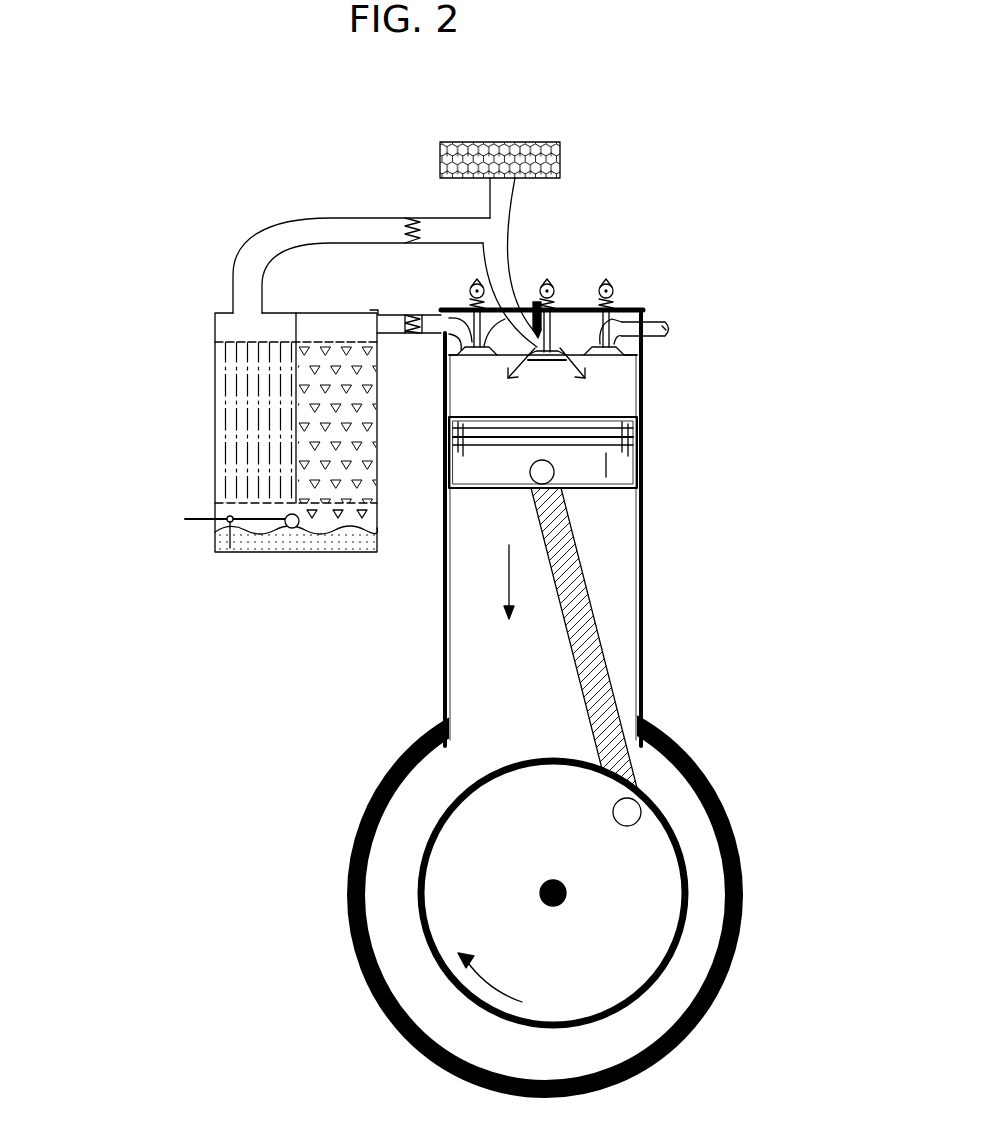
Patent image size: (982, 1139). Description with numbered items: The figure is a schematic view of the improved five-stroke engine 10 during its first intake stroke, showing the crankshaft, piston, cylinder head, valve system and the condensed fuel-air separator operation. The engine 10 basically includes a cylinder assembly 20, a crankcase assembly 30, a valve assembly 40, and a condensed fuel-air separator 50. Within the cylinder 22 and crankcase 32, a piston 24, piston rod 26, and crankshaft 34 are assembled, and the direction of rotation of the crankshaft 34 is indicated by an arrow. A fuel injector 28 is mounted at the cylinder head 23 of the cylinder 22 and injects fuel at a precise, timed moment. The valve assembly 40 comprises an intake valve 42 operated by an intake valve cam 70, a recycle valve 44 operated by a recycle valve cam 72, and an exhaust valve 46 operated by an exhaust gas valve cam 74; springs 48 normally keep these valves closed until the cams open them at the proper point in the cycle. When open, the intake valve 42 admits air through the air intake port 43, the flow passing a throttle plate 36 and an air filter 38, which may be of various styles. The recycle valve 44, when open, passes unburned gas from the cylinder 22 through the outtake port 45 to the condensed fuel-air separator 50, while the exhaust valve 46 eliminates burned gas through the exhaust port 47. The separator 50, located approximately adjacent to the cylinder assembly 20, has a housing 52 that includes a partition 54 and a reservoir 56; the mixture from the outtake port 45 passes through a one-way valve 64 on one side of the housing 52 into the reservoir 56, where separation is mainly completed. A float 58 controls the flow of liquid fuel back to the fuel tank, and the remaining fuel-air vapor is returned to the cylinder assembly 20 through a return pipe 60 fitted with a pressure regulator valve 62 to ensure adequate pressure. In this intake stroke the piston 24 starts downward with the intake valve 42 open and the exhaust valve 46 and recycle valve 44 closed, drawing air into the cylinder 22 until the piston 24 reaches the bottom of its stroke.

The five-stroke engine 10 is at (103, 227).
The cylinder assembly 20 is at (655, 609).
The cylinder 22 is at (442, 634).
The cylinder head 23 is at (638, 310).
The piston 24 is at (485, 478).
The piston rod 26 is at (578, 627).
The fuel injector 28 is at (537, 300).
The crankcase assembly 30 is at (340, 863).
The crankcase 32 is at (743, 873).
The crankshaft 34 is at (637, 953).
The throttle plate 36 is at (500, 262).
The air filter 38 is at (560, 160).
The valve assembly 40 is at (585, 283).
The intake valve 42 is at (568, 303).
The air intake port 43 is at (524, 304).
The recycle valve 44 is at (440, 313).
The outtake port 45 is at (447, 315).
The exhaust valve 46 is at (620, 308).
The exhaust port 47 is at (667, 328).
The spring 48 is at (615, 307).
The condensed fuel-air separator 50 is at (235, 465).
The housing 52 is at (215, 447).
The partition 54 is at (297, 368).
The reservoir 56 is at (347, 527).
The float 58 is at (292, 528).
The return pipe 60 is at (298, 228).
The pressure regulator valve 62 is at (410, 222).
The one-way valve 64 is at (414, 338).
The intake valve cam 70 is at (549, 283).
The recycle valve cam 72 is at (468, 287).
The exhaust gas valve cam 74 is at (613, 287).